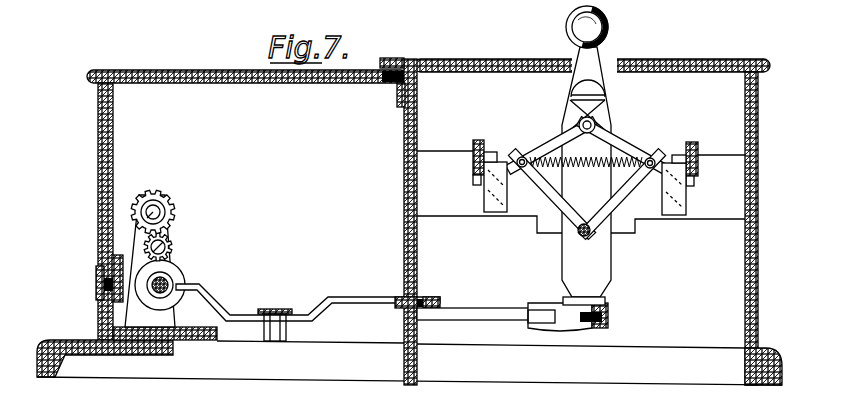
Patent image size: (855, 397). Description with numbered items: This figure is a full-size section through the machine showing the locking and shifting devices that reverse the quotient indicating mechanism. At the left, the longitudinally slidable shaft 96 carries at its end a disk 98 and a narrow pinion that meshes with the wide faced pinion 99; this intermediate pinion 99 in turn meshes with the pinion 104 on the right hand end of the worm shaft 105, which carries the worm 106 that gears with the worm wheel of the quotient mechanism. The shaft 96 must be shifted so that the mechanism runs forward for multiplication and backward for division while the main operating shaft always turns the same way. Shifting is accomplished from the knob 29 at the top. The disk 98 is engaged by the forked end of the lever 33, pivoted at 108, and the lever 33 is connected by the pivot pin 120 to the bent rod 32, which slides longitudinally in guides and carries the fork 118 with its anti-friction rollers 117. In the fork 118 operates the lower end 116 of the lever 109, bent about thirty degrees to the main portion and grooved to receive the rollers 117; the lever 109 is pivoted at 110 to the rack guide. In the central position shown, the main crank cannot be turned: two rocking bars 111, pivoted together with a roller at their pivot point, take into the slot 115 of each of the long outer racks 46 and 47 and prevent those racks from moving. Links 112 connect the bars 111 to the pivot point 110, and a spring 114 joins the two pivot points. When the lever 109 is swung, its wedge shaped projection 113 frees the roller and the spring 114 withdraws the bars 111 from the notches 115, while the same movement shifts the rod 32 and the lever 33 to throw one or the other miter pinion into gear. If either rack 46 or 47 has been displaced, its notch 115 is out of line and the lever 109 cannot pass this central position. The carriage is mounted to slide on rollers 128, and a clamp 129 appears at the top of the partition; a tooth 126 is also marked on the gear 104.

The knob 29 is at (610, 26).
The bent rod 32 is at (462, 312).
The lever 33 is at (331, 299).
The long outer rack 46 is at (697, 146).
The long outer rack 47 is at (477, 146).
The shaft 96 is at (160, 287).
The disk 98 is at (186, 278).
The wide faced pinion 99 is at (173, 247).
The pinion 104 is at (174, 200).
The worm shaft 105 is at (148, 203).
The worm 106 is at (170, 194).
The pivot 108 is at (270, 318).
The lever 109 is at (578, 118).
The pivot point 110 is at (600, 240).
The rocking bars 111 is at (548, 152).
The links 112 is at (620, 198).
The wedge shaped projection 113 is at (599, 106).
The spring 114 is at (547, 188).
The slot 115 is at (478, 178).
The lower end of lever 116 is at (610, 322).
The anti-friction rollers 117 is at (600, 326).
The fork 118 is at (562, 322).
The pivot pin 120 is at (428, 300).
The tooth 126 is at (157, 192).
The rollers 128 is at (106, 272).
The clamp 129 is at (408, 66).